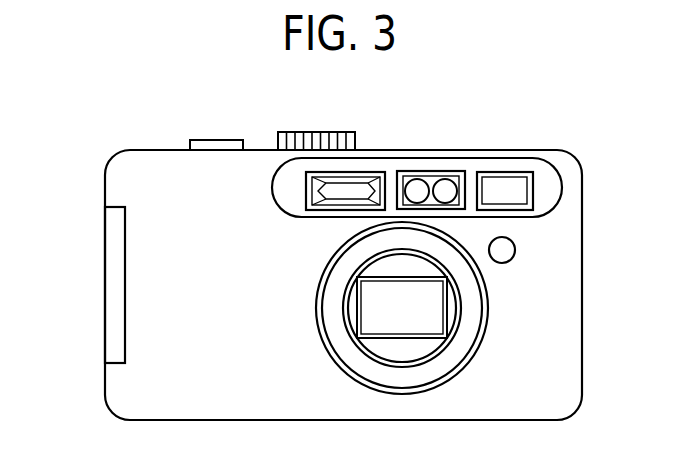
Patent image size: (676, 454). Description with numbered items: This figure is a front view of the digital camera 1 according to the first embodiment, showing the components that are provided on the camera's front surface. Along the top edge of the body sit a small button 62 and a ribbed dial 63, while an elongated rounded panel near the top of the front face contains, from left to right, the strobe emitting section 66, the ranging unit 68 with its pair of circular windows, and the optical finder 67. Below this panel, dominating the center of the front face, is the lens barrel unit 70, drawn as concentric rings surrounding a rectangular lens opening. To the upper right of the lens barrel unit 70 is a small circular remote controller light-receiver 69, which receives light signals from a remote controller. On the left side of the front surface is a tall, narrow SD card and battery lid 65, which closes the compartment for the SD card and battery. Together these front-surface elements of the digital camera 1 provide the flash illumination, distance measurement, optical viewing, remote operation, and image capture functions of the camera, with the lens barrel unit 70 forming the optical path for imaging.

The digital camera 1 is at (68, 333).
The shutter button 62 is at (232, 140).
The mode dial 63 is at (320, 132).
The SD card and battery lid 65 is at (112, 242).
The strobe emitting section 66 is at (365, 183).
The optical finder 67 is at (503, 183).
The ranging unit 68 is at (430, 171).
The remote controller light-receiver 69 is at (513, 246).
The lens barrel unit 70 is at (428, 347).